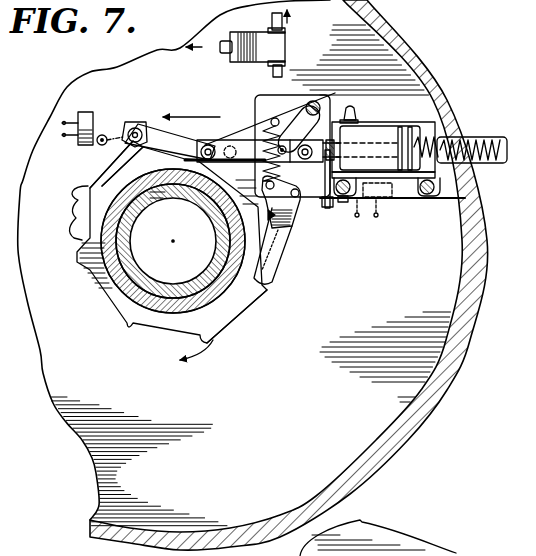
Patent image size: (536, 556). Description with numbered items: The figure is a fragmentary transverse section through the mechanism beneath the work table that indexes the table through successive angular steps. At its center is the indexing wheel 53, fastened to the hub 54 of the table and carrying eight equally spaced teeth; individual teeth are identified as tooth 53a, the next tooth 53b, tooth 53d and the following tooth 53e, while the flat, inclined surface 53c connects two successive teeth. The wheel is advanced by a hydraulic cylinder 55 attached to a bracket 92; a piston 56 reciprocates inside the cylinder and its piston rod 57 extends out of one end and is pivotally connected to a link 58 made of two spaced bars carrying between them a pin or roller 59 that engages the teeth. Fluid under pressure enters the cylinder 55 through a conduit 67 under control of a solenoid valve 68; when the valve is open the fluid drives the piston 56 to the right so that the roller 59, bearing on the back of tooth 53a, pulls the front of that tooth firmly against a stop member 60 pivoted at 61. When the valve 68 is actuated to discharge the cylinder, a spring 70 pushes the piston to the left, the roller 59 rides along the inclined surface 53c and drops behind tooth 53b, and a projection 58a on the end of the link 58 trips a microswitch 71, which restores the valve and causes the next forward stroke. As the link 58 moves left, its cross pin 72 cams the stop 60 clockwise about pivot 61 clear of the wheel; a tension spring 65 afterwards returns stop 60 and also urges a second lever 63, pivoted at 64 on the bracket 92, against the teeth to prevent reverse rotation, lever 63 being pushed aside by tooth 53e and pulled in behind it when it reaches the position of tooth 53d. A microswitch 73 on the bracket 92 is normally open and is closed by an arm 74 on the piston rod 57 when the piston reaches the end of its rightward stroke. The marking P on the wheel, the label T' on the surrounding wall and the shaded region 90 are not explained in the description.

The indexing wheel 53 is at (237, 303).
The tooth 53a is at (212, 168).
The tooth 53b is at (143, 150).
The surface 53c is at (76, 220).
The tooth 53d is at (264, 288).
The tooth 53e is at (276, 217).
The hub 54 is at (167, 312).
The hydraulic cylinder 55 is at (360, 218).
The piston 56 is at (392, 188).
The piston rod 57 is at (335, 150).
The link 58 is at (155, 128).
The projection 58a is at (99, 145).
The pin or roller 59 is at (126, 128).
The stop member 60 is at (228, 140).
The pivot 61 is at (318, 103).
The second lever 63 is at (276, 258).
The pivot 64 is at (297, 208).
The spring 65 is at (256, 120).
The conduit 67 is at (356, 108).
The solenoid valve 68 is at (286, 41).
The spring 70 is at (482, 137).
The microswitch 71 is at (80, 141).
The cross pin 72 is at (281, 168).
The microswitch 73 is at (343, 203).
The arm 74 is at (327, 210).
The casing interior 90 is at (421, 387).
The bracket 92 is at (392, 196).
The wheel P is at (132, 244).
The casing T' is at (301, 275).